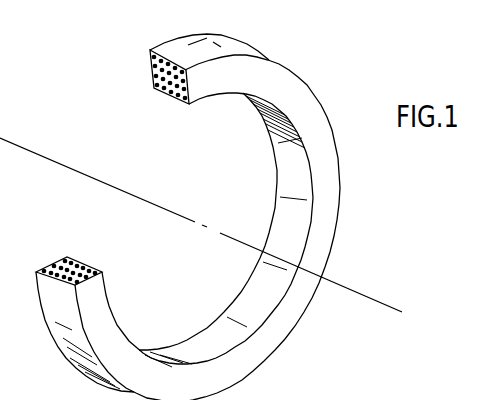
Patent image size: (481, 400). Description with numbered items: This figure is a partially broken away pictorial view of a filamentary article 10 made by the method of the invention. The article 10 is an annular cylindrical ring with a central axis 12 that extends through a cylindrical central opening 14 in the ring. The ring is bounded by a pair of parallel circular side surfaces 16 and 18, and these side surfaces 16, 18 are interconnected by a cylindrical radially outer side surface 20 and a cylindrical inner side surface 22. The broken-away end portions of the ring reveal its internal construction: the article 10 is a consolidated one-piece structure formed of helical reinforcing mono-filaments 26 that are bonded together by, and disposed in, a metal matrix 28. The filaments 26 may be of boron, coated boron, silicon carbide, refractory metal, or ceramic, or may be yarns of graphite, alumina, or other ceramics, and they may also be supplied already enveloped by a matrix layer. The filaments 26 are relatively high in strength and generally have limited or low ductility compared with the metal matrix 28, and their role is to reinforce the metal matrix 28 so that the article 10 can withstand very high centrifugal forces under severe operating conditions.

The article 10 is at (303, 40).
The central axis 12 is at (350, 288).
The cylindrical central opening 14 is at (247, 216).
The side surface 16 is at (322, 158).
The side surface 18 is at (150, 73).
The radially outer side surface 20 is at (228, 49).
The inner side surface 22 is at (291, 168).
The reinforcing mono-filaments 26 is at (182, 93).
The metal matrix 28 is at (163, 80).